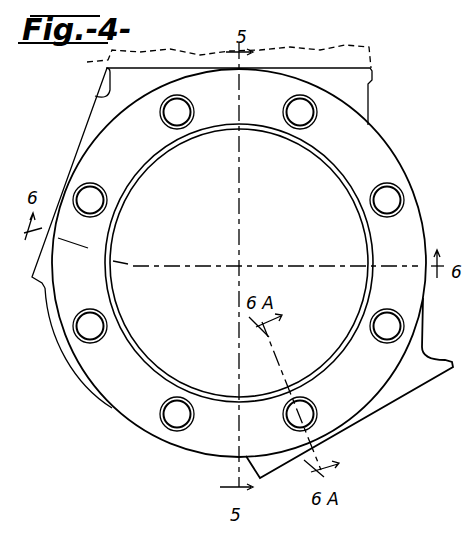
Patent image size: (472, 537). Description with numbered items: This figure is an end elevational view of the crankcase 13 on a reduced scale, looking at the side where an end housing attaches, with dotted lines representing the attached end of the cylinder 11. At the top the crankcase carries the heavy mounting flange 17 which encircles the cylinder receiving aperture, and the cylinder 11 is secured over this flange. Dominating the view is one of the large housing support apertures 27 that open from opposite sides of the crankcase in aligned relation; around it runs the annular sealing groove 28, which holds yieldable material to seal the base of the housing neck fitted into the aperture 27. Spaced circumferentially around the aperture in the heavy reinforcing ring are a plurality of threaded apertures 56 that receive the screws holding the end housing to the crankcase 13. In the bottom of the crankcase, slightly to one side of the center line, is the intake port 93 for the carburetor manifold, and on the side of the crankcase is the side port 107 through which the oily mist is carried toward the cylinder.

The cylinder 11 is at (218, 56).
The side port 107 is at (99, 113).
The mounting flange 17 is at (359, 95).
The housing support aperture 27 is at (308, 159).
The sealing groove 28 is at (346, 191).
The crankcase 13 is at (60, 340).
The threaded aperture 56 is at (176, 418).
The intake port 93 is at (410, 378).